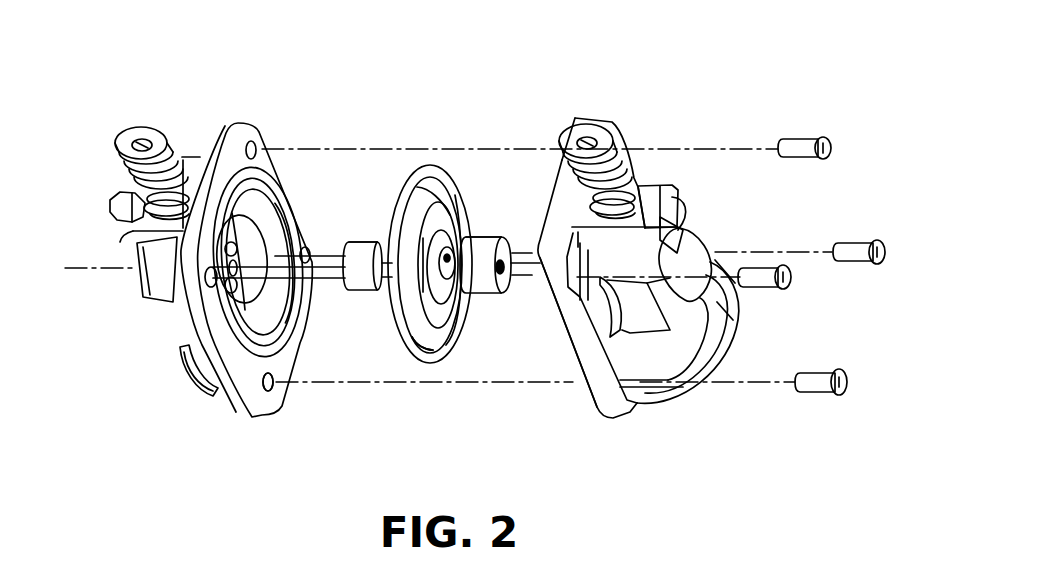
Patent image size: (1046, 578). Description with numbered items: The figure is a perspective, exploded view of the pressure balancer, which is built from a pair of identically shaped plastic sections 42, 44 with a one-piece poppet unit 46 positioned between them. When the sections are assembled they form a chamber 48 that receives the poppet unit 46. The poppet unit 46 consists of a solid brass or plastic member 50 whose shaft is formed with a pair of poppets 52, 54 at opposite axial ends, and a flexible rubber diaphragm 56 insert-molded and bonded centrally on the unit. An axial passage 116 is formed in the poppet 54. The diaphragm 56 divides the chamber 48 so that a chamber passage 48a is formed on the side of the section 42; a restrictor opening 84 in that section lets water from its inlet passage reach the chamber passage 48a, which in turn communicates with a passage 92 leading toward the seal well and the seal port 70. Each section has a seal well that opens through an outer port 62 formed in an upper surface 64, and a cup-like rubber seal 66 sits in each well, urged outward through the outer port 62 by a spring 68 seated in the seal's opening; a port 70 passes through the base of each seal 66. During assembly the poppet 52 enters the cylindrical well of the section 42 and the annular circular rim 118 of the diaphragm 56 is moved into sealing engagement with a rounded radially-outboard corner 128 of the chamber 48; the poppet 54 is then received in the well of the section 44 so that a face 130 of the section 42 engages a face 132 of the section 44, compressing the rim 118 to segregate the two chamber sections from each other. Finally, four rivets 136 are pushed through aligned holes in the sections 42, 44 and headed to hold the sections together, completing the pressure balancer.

The plastic section 42 is at (243, 405).
The plastic section 44 is at (610, 413).
The one-piece poppet unit 46 is at (422, 385).
The chamber 48 is at (302, 282).
The chamber passage 48a is at (236, 266).
The member 50 is at (488, 234).
The poppet 52 is at (352, 282).
The poppet 54 is at (485, 287).
The flexible diaphragm 56 is at (440, 163).
The outer port 62 is at (194, 163).
The upper surface 64 is at (133, 203).
The cup-like rubber seal 66 is at (127, 140).
The spring 68 is at (150, 211).
The port 70 is at (142, 143).
The restrictor opening 84 is at (218, 268).
The passage 92 is at (267, 318).
The passage 116 is at (514, 257).
The annular circular rim 118 is at (403, 333).
The rounded radially-outboard corner 128 is at (282, 246).
The face 130 is at (278, 412).
The face 132 is at (567, 353).
The rivets 136 is at (797, 140).